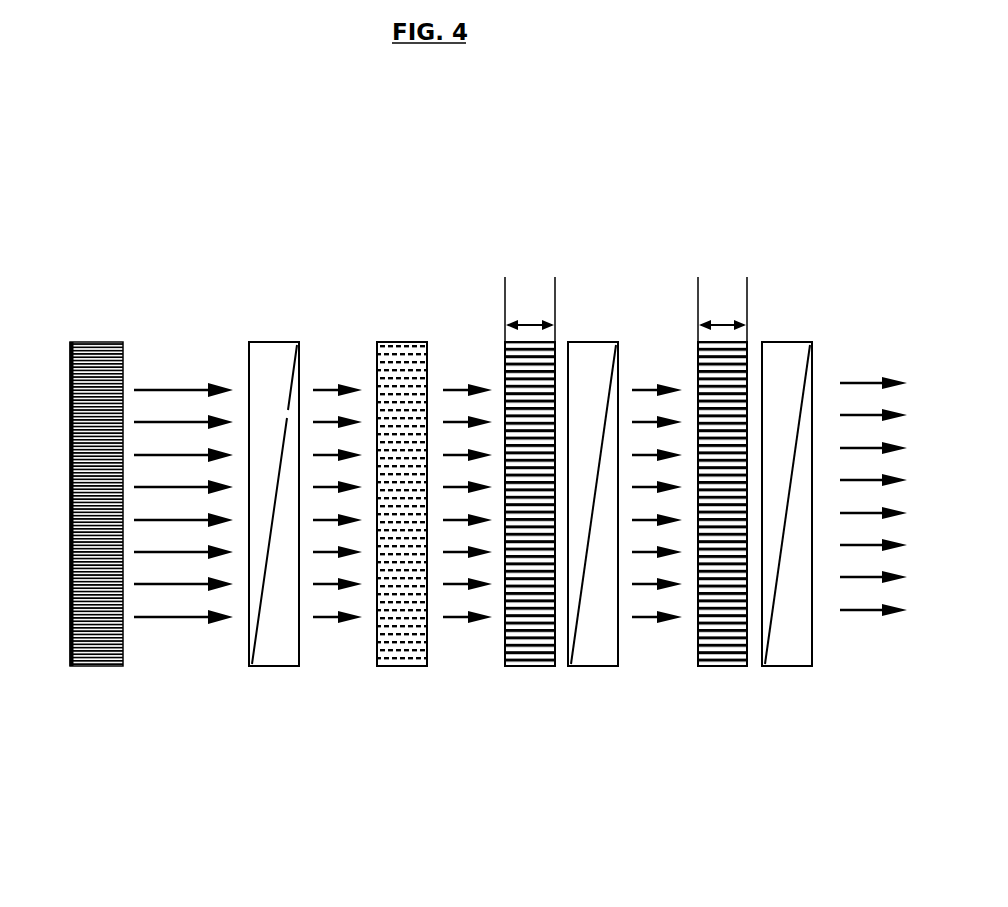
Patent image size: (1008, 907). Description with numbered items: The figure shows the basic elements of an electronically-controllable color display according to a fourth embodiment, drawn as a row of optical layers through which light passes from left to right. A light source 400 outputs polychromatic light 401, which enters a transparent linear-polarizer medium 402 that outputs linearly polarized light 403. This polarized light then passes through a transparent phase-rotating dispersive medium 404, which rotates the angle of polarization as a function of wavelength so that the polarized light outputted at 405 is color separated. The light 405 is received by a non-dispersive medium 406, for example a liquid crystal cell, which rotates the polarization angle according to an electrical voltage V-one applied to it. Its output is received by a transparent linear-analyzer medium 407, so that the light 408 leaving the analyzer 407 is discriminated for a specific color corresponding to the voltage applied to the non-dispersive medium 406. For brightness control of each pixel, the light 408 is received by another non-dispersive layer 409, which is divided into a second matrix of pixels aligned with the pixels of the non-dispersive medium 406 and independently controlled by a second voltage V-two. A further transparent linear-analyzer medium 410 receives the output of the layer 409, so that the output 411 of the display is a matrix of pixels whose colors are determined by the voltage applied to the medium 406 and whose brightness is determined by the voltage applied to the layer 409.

The light source 400 is at (103, 668).
The polychromatic light 401 is at (170, 617).
The transparent linear-polarizer medium 402 is at (265, 668).
The linearly polarized light 403 is at (333, 618).
The transparent phase-rotating dispersive medium 404 is at (393, 668).
The color-separated polarized light 405 is at (460, 618).
The non-dispersive medium 406 is at (535, 668).
The transparent linear-analyzer medium 407 is at (585, 668).
The color-discriminated light 408 is at (650, 619).
The non-dispersive layer 409 is at (713, 668).
The transparent linear-analyzer medium 410 is at (780, 668).
The display output 411 is at (862, 614).